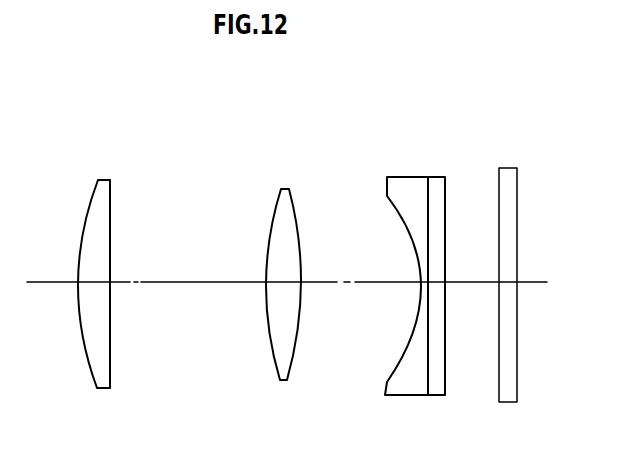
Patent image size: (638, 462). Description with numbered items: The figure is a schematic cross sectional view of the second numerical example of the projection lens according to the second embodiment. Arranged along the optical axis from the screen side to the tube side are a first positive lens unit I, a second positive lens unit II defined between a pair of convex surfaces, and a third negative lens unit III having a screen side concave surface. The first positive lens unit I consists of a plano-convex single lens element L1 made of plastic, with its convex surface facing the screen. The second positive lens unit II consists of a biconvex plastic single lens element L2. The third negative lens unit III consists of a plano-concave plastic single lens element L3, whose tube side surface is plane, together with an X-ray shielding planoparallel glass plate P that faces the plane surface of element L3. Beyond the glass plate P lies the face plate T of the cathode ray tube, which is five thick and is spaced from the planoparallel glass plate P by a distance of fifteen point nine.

The first positive lens unit I is at (137, 164).
The second positive lens unit II is at (316, 164).
The third negative lens unit III is at (370, 164).
The plano-convex single lens element L1 is at (100, 387).
The biconvex plastic single lens element L2 is at (283, 368).
The plano-concave single lens element L3 is at (386, 395).
The X-ray shielding planoparallel glass plate P is at (443, 395).
The face plate T is at (501, 403).